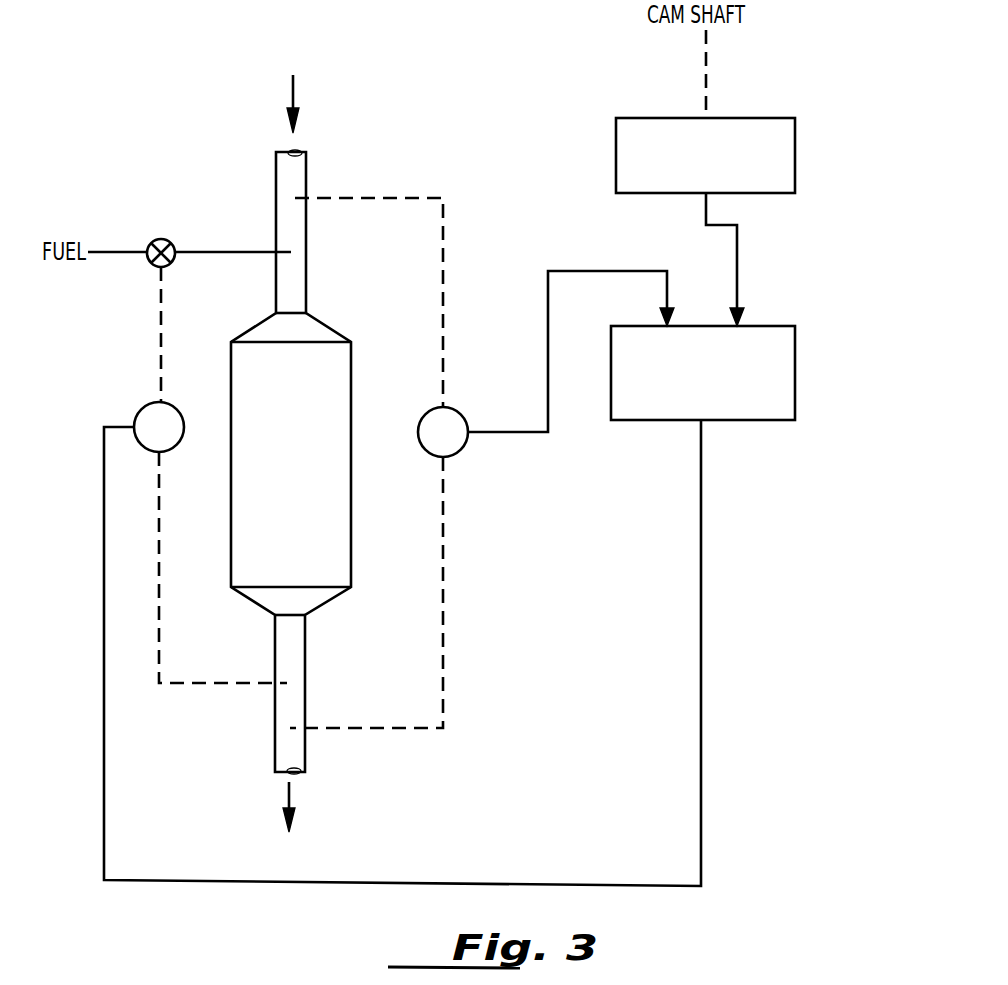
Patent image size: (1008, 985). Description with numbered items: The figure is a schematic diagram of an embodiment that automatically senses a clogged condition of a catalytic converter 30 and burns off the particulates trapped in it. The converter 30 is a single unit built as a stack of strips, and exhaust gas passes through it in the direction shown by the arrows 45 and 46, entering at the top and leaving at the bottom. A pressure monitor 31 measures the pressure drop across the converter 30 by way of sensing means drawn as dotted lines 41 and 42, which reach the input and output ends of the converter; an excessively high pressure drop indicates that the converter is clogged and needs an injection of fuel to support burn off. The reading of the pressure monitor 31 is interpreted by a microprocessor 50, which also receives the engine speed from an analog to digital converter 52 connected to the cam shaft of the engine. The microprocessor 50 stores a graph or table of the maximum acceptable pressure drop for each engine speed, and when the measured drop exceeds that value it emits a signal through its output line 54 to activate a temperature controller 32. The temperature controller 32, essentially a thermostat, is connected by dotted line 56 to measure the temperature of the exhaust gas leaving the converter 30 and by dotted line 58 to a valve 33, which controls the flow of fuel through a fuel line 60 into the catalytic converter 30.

The catalytic converter 30 is at (324, 425).
The pressure monitor 31 is at (455, 428).
The temperature controller 32 is at (140, 412).
The valve 33 is at (166, 239).
The dotted line (sensing means) 41 is at (363, 195).
The dotted line (sensing means) 42 is at (460, 628).
The arrow 45 is at (296, 93).
The arrow 46 is at (292, 806).
The microprocessor 50 is at (783, 355).
The analog to digital converter 52 is at (787, 165).
The output line 54 is at (702, 807).
The dotted line 56 is at (200, 680).
The dotted line 58 is at (163, 333).
The fuel line 60 is at (215, 252).